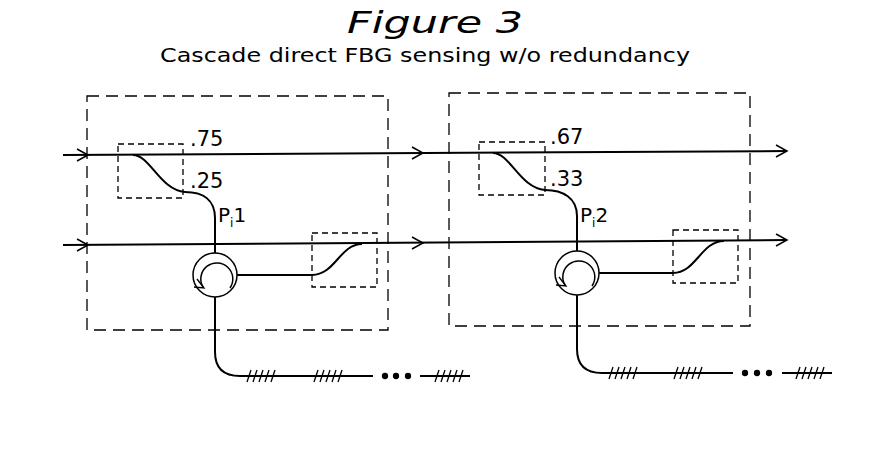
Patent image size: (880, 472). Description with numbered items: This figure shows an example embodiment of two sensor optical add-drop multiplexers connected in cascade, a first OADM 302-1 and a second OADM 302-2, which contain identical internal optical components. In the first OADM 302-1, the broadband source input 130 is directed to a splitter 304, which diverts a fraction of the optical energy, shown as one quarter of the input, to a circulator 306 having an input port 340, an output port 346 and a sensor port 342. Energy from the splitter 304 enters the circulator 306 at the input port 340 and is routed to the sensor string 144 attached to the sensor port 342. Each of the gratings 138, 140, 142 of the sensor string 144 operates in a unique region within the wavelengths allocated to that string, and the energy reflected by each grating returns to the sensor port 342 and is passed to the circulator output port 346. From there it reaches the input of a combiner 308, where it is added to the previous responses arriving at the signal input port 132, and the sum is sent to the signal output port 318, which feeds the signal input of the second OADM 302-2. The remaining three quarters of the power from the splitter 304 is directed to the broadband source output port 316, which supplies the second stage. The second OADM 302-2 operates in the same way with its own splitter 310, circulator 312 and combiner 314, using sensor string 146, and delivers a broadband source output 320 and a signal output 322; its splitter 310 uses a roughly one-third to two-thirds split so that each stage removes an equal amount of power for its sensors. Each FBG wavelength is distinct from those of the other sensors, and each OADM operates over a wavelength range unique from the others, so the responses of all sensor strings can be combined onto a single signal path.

The first OADM 302-1 is at (237, 199).
The second OADM 302-2 is at (599, 196).
The broadband source input 130 is at (407, 137).
The signal input port 132 is at (407, 227).
The splitter 304 is at (151, 158).
The circulator 306 is at (195, 282).
The combiner 308 is at (344, 248).
The splitter 310 is at (512, 156).
The circulator 312 is at (556, 280).
The combiner 314 is at (705, 244).
The broadband source output port 316 is at (418, 131).
The signal output port 318 is at (418, 221).
The broadband source output 320 is at (775, 129).
The signal output 322 is at (775, 219).
The input port 340 is at (213, 239).
The sensor port 342 is at (216, 303).
The output port 346 is at (243, 282).
The grating 138 is at (260, 379).
The grating 140 is at (333, 379).
The grating 142 is at (449, 379).
The sensor string 144 is at (355, 397).
The sensor string 146 is at (838, 392).